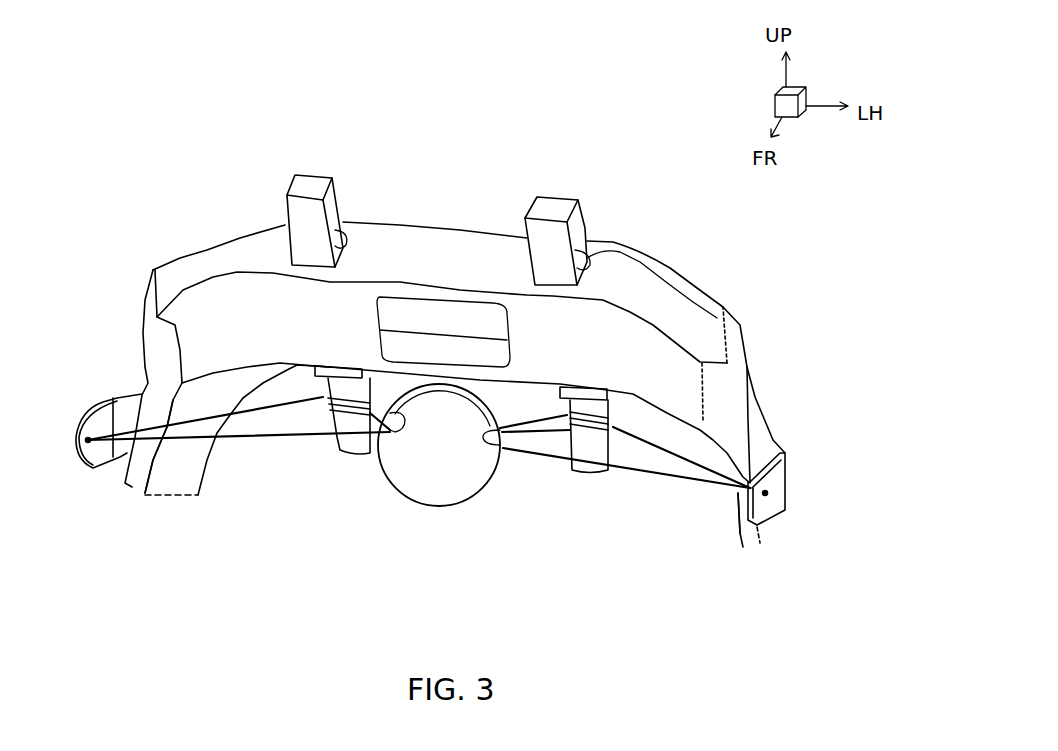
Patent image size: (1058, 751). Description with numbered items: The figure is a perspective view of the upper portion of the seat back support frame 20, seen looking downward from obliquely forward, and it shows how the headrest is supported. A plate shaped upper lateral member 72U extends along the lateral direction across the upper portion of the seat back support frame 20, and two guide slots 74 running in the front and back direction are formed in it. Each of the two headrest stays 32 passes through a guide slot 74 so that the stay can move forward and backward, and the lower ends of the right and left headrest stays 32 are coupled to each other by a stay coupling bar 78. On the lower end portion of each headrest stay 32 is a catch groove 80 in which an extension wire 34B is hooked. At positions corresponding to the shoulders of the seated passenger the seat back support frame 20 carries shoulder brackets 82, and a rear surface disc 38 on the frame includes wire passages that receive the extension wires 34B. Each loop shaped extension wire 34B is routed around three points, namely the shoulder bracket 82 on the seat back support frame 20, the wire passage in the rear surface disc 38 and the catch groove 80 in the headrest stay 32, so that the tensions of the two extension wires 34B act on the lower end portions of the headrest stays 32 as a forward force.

The seat back support frame 20 is at (675, 315).
The headrest stay 32 is at (340, 200).
The extension wire 34B is at (233, 443).
The rear surface disc 38 is at (437, 483).
The upper lateral member 72U is at (458, 252).
The guide slot 74 is at (347, 222).
The stay coupling bar 78 is at (532, 457).
The catch groove 80 is at (303, 440).
The shoulder bracket 82 is at (120, 397).